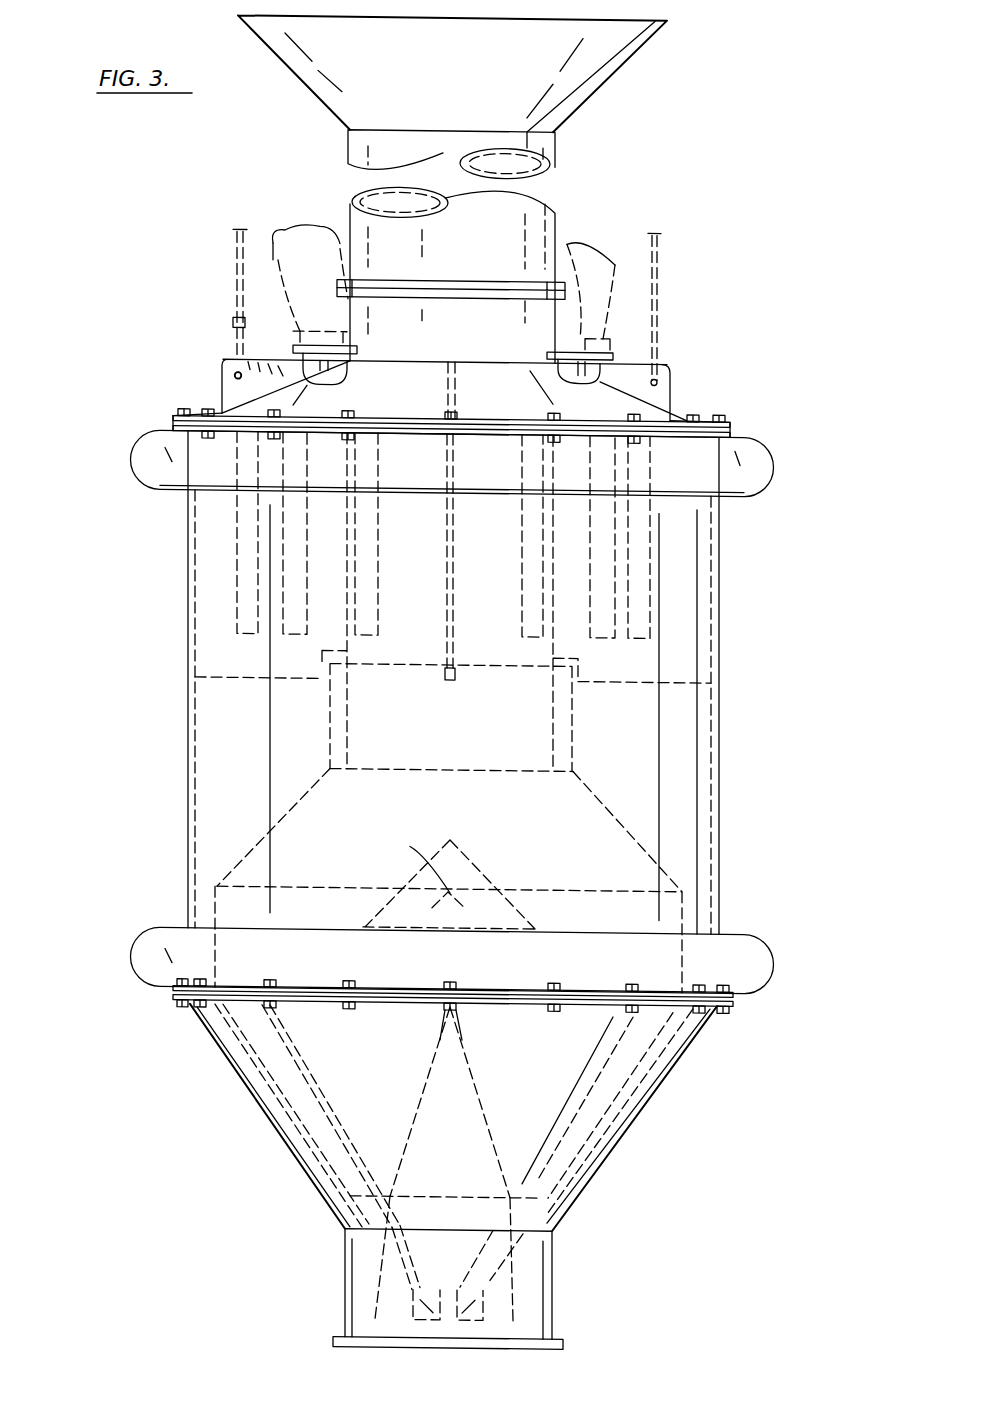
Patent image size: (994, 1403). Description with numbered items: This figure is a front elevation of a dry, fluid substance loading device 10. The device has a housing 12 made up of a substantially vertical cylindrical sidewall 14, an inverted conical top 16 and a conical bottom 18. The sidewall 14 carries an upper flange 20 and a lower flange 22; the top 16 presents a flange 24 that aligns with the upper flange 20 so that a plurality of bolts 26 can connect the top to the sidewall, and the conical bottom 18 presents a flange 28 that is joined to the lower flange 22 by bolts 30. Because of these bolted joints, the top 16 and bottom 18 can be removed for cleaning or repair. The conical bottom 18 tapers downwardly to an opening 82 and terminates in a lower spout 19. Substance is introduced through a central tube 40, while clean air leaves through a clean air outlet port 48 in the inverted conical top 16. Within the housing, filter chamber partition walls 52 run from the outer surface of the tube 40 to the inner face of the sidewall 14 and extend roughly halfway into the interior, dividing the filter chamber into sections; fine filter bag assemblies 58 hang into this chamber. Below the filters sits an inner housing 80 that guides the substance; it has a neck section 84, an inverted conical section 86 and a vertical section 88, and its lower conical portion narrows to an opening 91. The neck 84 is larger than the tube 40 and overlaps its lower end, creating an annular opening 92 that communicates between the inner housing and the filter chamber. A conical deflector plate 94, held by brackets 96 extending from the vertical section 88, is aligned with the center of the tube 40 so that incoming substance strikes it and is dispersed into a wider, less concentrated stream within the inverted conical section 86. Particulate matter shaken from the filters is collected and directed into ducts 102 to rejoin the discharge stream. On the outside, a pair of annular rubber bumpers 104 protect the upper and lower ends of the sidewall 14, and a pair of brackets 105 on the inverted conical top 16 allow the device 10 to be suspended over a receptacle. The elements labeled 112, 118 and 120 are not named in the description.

The dry, fluid substance loading device 10 is at (730, 347).
The housing 12 is at (187, 667).
The vertical cylindrical sidewall 14 is at (207, 738).
The inverted conical top 16 is at (687, 413).
The conical bottom 18 is at (630, 1123).
The lower spout 19 is at (555, 1310).
The upper flange 20 is at (172, 421).
The lower flange 22 is at (173, 991).
The flange 24 is at (172, 412).
The bolts 26 is at (727, 414).
The flange 28 is at (177, 1004).
The bolts 30 is at (637, 1012).
The tube 40 is at (580, 255).
The clean air outlet port 48 is at (300, 350).
The filter chamber partition walls 52 is at (236, 678).
The fine filter bag assembly 58 is at (650, 608).
The inner housing 80 is at (623, 820).
The opening 82 is at (555, 1240).
The neck section 84 is at (574, 706).
The inverted conical section 86 is at (607, 792).
The vertical section 88 is at (685, 903).
The opening 91 is at (417, 1197).
The annular opening 92 is at (546, 690).
The conical deflector plate 94 is at (480, 858).
The brackets 96 is at (429, 863).
The ducts 102 is at (403, 1283).
The annular rubber bumpers 104 is at (141, 477).
The brackets 105 is at (222, 374).
The rod 112 is at (228, 240).
The collar 118 is at (557, 145).
The hose 120 is at (275, 210).